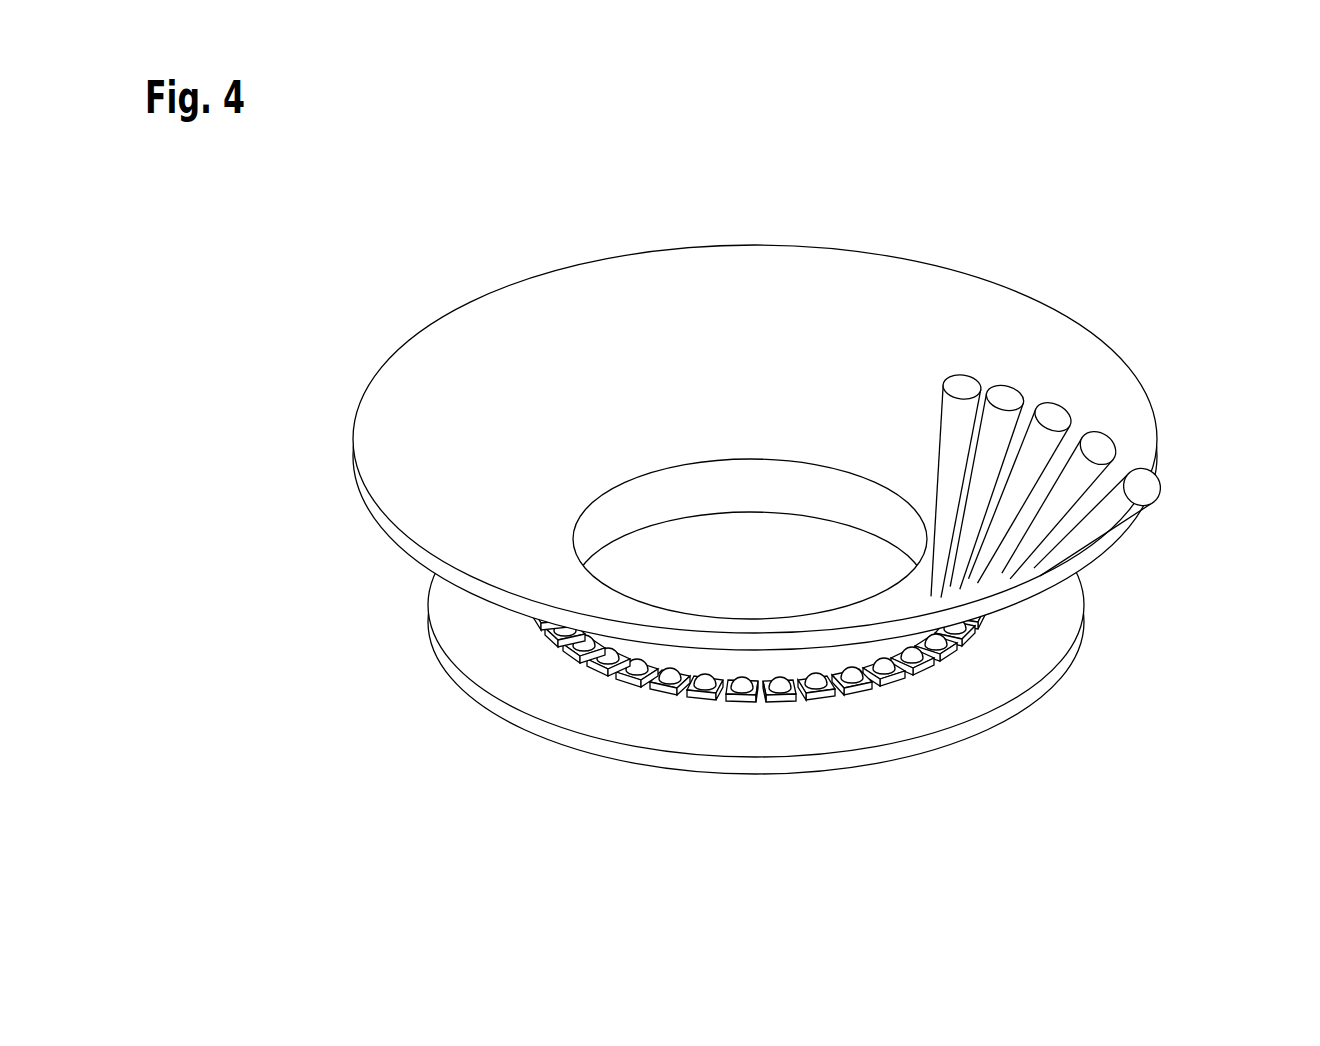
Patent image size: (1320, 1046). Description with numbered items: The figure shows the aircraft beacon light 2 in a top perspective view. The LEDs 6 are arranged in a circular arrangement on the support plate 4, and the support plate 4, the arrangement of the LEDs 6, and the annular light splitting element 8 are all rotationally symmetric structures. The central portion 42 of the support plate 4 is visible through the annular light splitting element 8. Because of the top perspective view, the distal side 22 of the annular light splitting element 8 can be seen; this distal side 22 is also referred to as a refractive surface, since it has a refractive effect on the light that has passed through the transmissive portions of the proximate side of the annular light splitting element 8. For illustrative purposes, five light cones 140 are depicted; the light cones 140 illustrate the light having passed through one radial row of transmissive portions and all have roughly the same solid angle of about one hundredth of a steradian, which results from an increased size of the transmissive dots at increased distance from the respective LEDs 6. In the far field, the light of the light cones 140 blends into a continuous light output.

The aircraft beacon light 2 is at (720, 504).
The support plate 4 is at (648, 723).
The LEDs 6 is at (747, 690).
The annular light splitting element 8 is at (755, 413).
The distal side 22 is at (966, 326).
The central portion 42 is at (770, 592).
The light cones 140 is at (1137, 489).